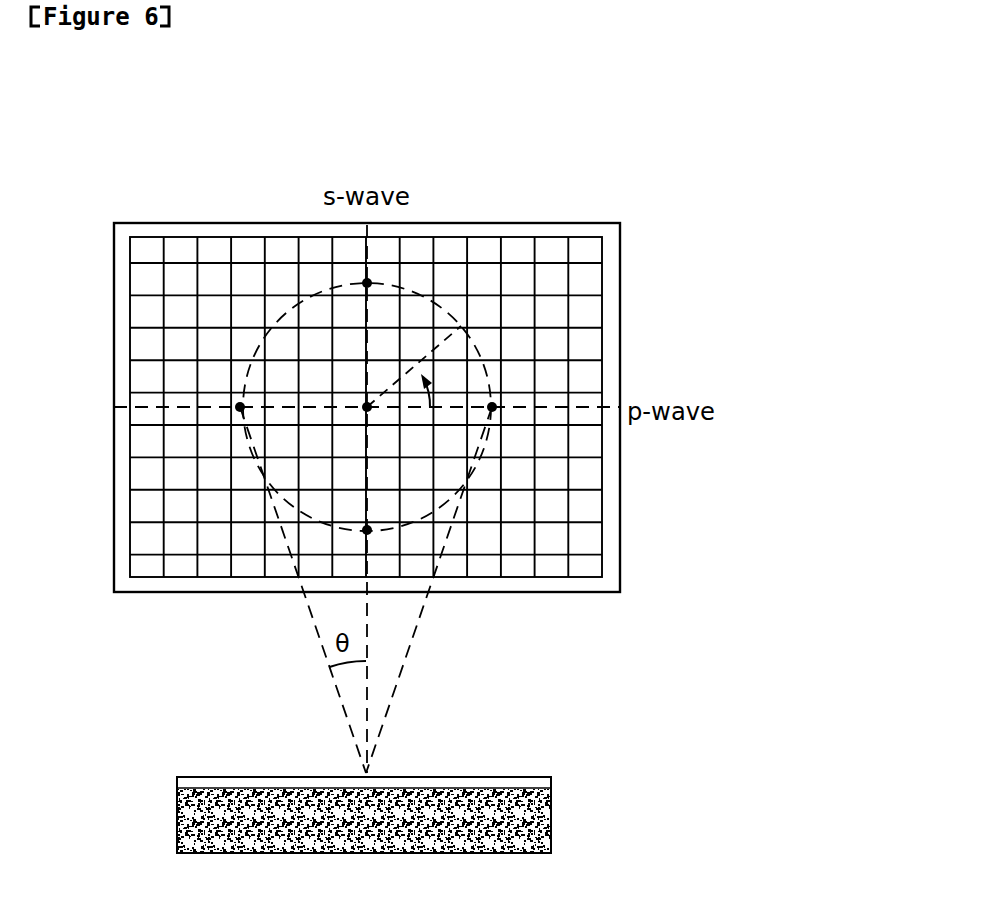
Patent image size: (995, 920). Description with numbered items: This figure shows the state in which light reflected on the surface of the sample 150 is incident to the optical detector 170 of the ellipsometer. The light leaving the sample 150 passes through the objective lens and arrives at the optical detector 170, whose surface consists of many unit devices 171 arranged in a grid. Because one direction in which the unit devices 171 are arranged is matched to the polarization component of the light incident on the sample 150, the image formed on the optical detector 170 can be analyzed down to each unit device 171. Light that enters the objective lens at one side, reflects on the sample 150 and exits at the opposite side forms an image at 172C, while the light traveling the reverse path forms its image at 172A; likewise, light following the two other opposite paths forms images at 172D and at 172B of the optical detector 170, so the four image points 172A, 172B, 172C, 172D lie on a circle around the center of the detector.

The sample 150 is at (553, 812).
The optical detector 170 is at (620, 497).
The unit device 171 is at (547, 255).
The image position 172A is at (240, 407).
The image position 172B is at (367, 283).
The image position 172C is at (492, 407).
The image position 172D is at (367, 530).